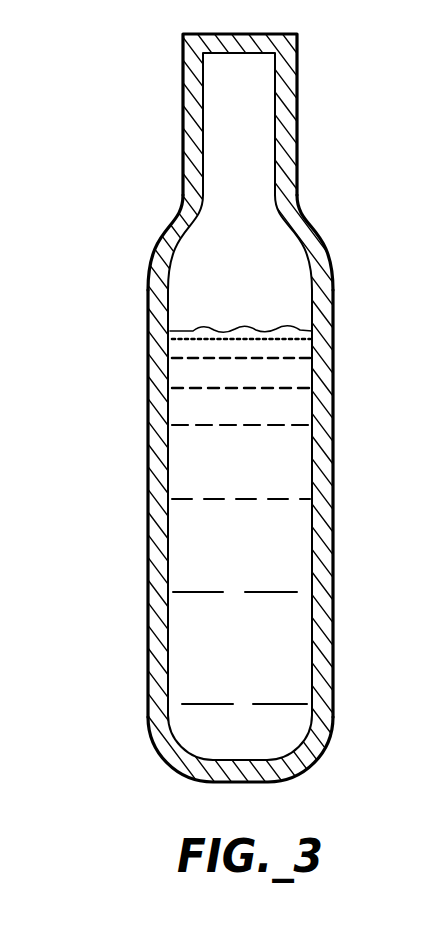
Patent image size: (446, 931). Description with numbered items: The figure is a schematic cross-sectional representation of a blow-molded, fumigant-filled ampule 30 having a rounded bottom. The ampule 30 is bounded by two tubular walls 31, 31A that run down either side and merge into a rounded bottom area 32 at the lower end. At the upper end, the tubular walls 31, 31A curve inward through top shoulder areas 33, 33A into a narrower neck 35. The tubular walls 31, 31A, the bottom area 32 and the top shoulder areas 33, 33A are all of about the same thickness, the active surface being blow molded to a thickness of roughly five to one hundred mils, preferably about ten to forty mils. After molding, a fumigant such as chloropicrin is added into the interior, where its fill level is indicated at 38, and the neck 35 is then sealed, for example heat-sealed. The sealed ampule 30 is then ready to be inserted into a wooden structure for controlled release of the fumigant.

The ampule 30 is at (362, 313).
The tubular wall 31 is at (156, 512).
The tubular wall 31A is at (333, 567).
The bottom area 32 is at (203, 785).
The top shoulder area 33 is at (151, 232).
The top shoulder area 33A is at (335, 232).
The neck 35 is at (165, 35).
The contents / liquid fill level 38 is at (302, 470).